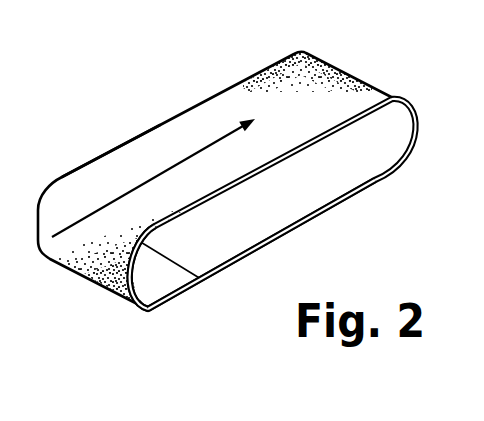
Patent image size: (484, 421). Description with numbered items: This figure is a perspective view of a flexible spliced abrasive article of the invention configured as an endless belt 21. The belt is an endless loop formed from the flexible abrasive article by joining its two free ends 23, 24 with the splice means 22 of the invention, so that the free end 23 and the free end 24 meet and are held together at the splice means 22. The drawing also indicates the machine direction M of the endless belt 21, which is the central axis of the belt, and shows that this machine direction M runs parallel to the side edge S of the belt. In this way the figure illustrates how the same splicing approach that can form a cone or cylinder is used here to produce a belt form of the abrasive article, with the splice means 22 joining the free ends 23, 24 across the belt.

The endless belt 21 is at (193, 88).
The splice means 22 is at (200, 280).
The free end 23 is at (160, 287).
The free end 24 is at (223, 253).
The side edge S is at (99, 158).
The machine direction M is at (193, 152).